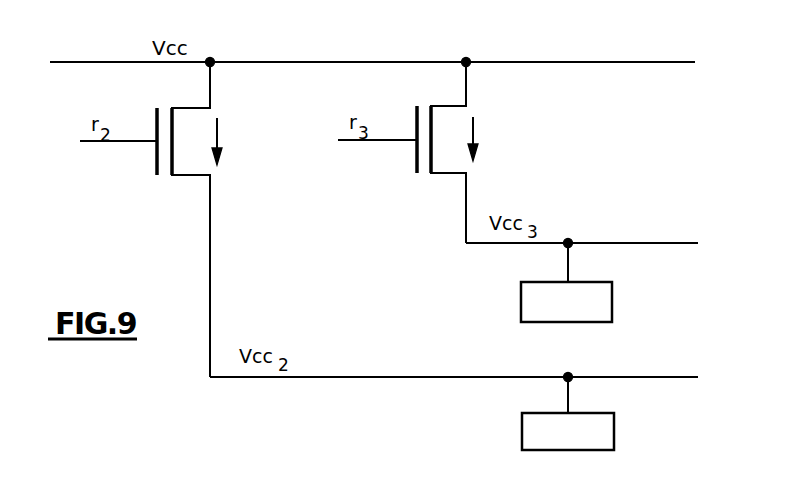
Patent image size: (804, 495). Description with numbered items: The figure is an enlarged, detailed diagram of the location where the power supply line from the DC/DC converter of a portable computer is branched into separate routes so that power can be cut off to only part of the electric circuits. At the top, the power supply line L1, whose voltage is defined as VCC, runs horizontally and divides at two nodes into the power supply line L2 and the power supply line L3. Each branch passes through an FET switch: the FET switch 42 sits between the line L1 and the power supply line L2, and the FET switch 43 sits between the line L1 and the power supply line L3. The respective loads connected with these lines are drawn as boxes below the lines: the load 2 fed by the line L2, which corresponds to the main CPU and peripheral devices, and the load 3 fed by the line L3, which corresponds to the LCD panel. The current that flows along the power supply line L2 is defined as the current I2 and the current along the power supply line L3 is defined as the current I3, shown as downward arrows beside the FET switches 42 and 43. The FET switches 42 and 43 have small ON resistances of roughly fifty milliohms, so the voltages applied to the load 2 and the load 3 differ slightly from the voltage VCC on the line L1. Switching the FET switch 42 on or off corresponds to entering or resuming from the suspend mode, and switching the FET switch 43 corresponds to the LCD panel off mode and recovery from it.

The FET switch 42 is at (190, 196).
The FET switch 43 is at (449, 194).
The load LOAD2 2 is at (568, 413).
The load LOAD3 3 is at (566, 282).
The power supply line L1 is at (372, 41).
The power supply line L2 is at (454, 356).
The power supply line L3 is at (582, 224).
The current I2 is at (231, 142).
The current I3 is at (487, 140).